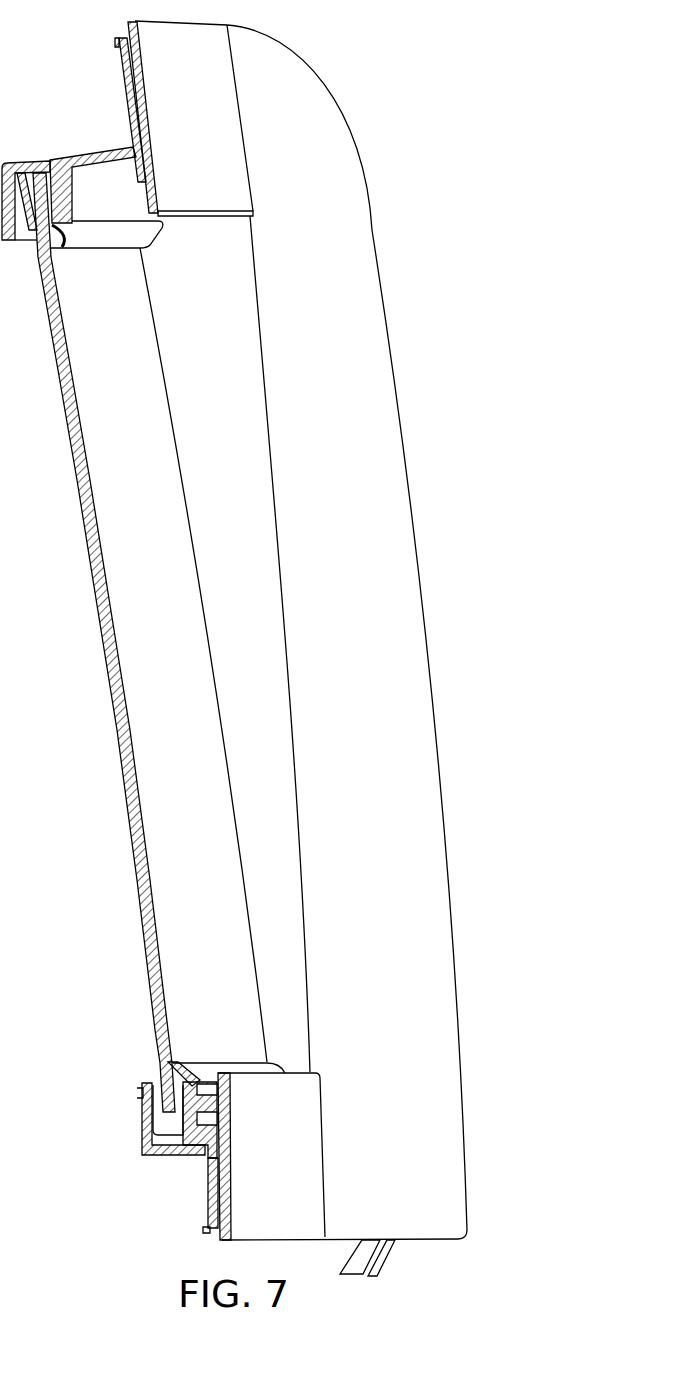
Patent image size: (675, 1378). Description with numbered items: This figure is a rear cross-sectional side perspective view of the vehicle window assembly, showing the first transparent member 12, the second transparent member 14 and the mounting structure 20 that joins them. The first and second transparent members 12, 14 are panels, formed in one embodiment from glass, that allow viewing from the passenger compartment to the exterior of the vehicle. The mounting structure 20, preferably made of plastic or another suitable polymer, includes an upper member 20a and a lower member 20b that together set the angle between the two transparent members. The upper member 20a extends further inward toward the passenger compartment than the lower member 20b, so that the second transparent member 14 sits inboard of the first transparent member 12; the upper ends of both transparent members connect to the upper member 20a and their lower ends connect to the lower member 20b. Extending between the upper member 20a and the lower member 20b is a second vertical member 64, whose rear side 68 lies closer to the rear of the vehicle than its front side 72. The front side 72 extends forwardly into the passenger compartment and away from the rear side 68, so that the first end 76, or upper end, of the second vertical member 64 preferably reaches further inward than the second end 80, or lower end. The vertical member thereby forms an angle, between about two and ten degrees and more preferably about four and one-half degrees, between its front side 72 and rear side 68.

The first transparent member 12 is at (380, 618).
The second transparent member 14 is at (138, 580).
The mounting structure 20 is at (62, 148).
The upper member 20a is at (24, 163).
The lower member 20b is at (170, 1160).
The second vertical member 64 is at (232, 468).
The rear side of the second vertical member 68 is at (267, 400).
The front side of the second vertical member 72 is at (162, 343).
The first end of the second vertical member 76 is at (212, 247).
The second end of the second vertical member 80 is at (285, 1048).